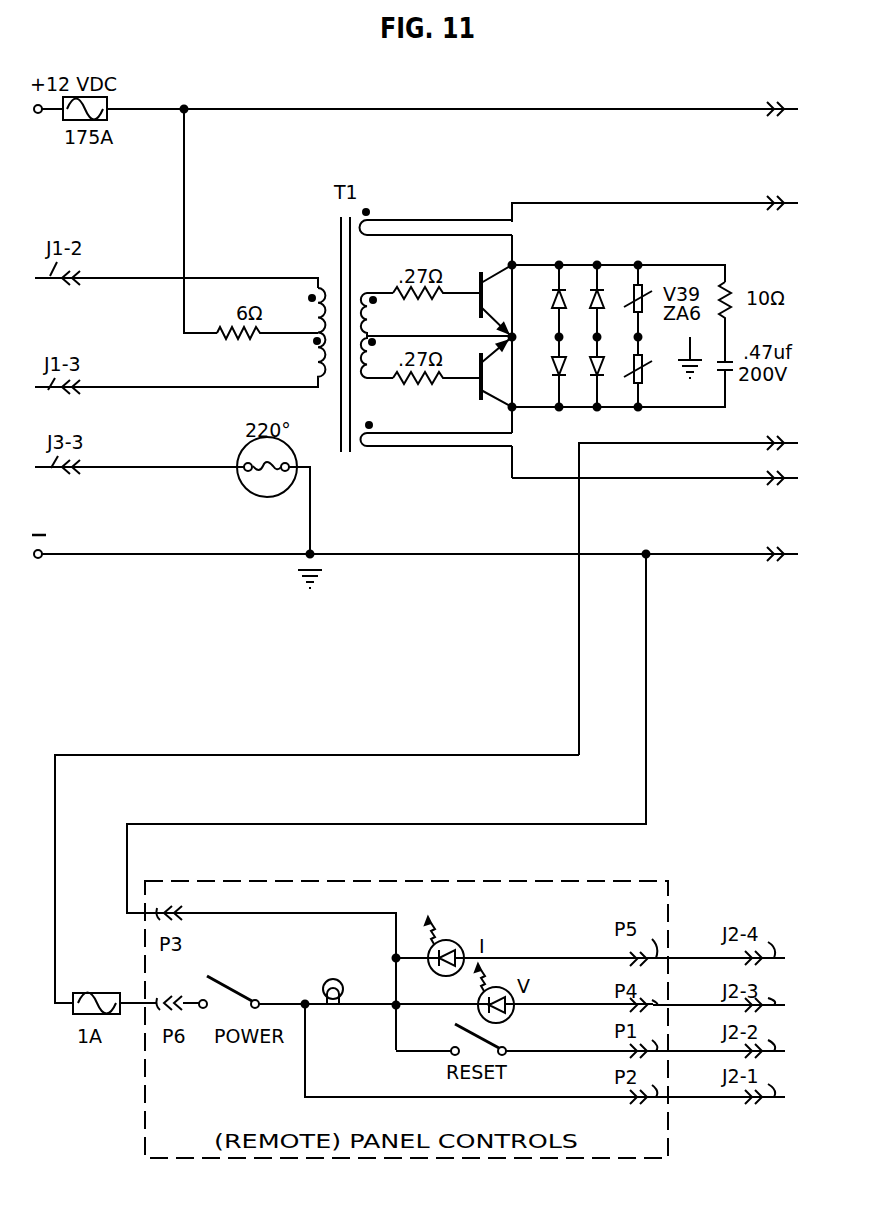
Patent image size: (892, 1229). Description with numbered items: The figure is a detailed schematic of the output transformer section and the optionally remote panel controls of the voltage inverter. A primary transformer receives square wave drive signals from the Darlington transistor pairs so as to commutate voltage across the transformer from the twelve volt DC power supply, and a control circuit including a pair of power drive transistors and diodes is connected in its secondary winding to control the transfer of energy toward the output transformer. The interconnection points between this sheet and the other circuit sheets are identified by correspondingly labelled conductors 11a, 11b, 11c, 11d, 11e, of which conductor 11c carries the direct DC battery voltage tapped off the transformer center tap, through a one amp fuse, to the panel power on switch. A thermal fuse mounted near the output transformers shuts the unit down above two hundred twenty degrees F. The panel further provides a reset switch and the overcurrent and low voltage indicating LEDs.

The conductor 11a is at (790, 109).
The conductor 11b is at (790, 203).
The conductor 11c is at (790, 443).
The conductor 11d is at (790, 478).
The conductor 11e is at (790, 554).